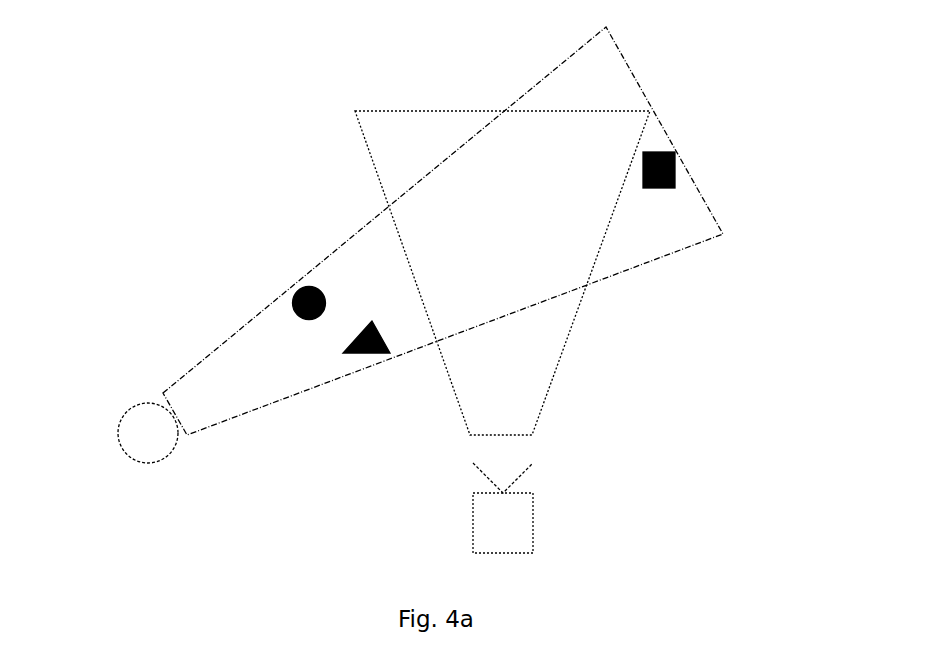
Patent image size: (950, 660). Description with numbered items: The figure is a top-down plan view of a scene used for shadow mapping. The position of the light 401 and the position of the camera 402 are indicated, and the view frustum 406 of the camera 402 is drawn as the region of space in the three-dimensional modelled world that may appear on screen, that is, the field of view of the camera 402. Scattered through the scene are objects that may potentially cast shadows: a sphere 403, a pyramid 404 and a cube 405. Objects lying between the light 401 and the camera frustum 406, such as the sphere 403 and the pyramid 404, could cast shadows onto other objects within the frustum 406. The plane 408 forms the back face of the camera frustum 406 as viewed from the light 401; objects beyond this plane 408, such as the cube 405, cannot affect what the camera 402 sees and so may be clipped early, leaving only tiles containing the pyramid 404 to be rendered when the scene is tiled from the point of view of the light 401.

The light 401 is at (119, 421).
The camera 402 is at (533, 528).
The sphere 403 is at (301, 285).
The pyramid 404 is at (375, 356).
The cube 405 is at (675, 178).
The view frustum of the camera 406 is at (393, 143).
The plane of the camera frustum 408 is at (565, 340).